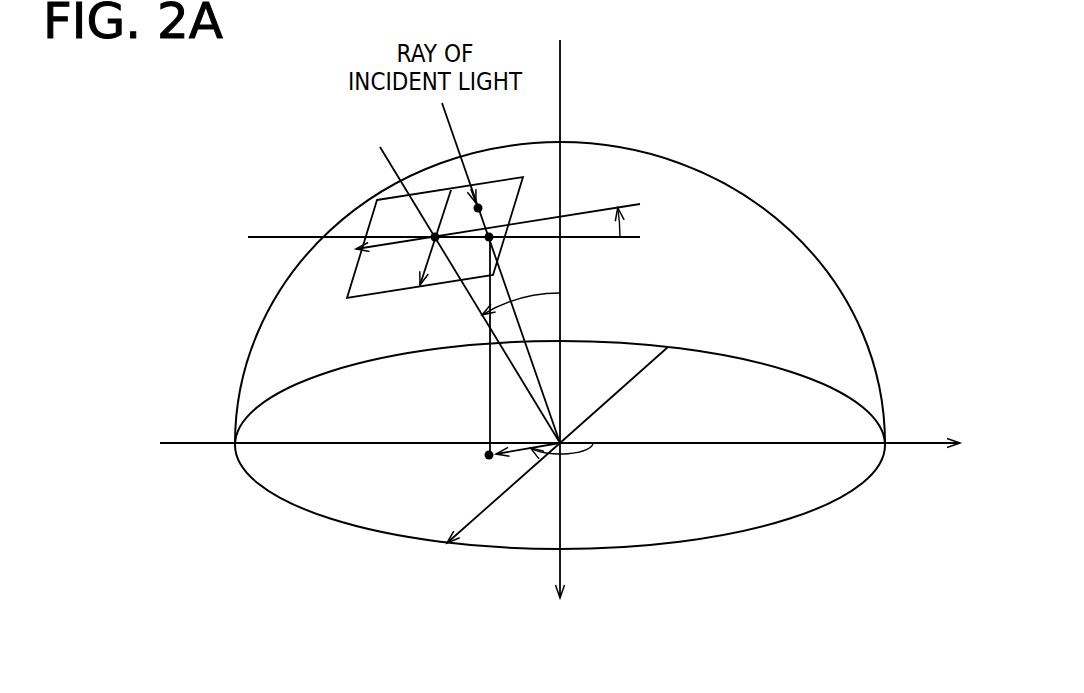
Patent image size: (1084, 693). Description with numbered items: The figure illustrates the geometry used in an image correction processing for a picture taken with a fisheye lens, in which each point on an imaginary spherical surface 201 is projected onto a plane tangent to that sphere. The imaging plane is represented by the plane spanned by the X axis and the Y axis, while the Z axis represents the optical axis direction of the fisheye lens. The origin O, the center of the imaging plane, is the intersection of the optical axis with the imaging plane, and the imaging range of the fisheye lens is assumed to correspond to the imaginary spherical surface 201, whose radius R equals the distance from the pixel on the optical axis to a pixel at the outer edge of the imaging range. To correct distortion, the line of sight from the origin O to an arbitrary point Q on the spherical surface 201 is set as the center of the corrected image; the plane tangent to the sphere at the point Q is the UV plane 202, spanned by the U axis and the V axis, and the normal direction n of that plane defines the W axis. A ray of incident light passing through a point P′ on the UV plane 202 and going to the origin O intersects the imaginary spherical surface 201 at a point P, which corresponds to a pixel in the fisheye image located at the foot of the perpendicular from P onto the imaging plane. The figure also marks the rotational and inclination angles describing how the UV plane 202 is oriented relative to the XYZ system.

The imaginary spherical surface 201 is at (835, 280).
The UV plane 202 is at (523, 200).
The normal line of plane 202 n is at (462, 278).
The point P is at (489, 237).
The point P' P′ is at (478, 208).
The point Q is at (435, 237).
The origin O is at (540, 421).
The radius of the imaginary spherical surface R is at (643, 412).
The U-axis U is at (488, 236).
The V-axis V is at (431, 255).
The W-axis W is at (472, 346).
The X-axis X is at (560, 464).
The Y-axis Y is at (498, 510).
The Z-axis Z is at (577, 321).